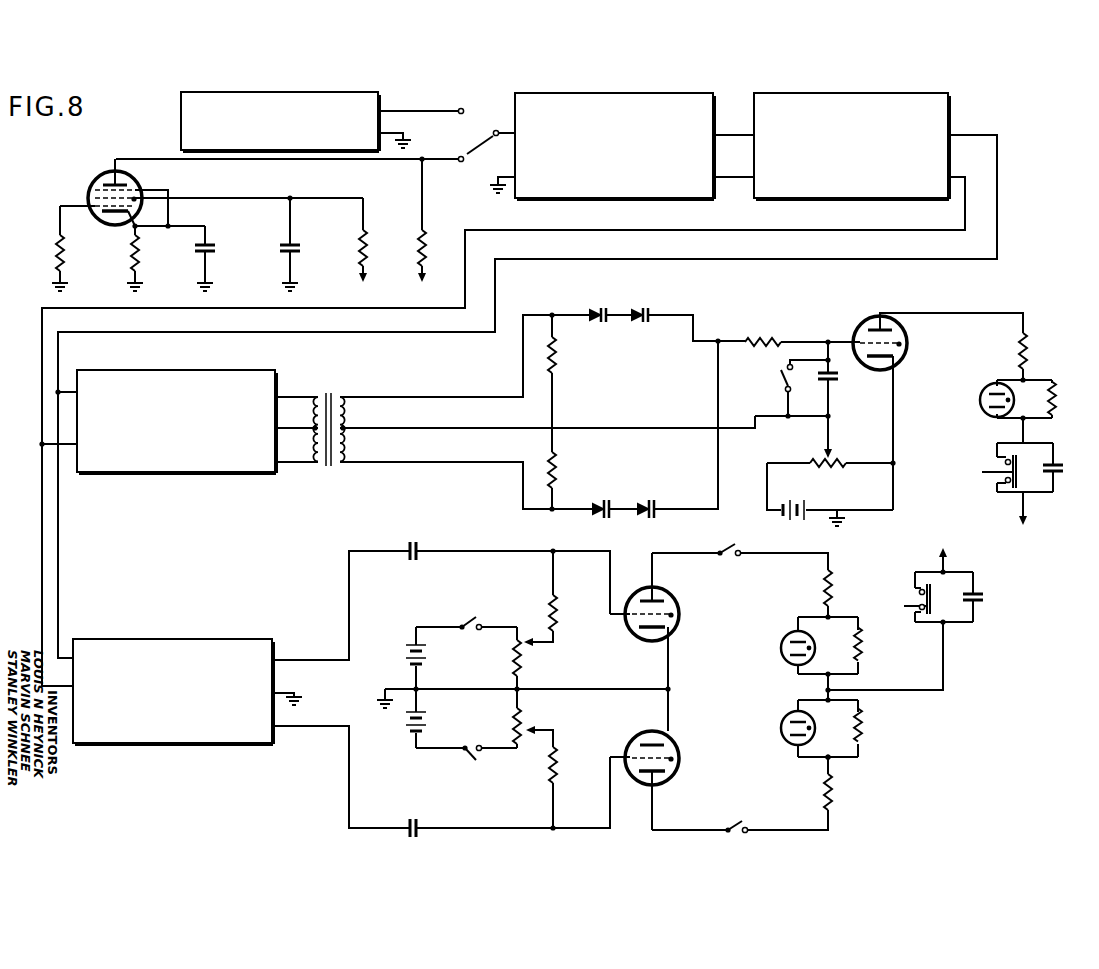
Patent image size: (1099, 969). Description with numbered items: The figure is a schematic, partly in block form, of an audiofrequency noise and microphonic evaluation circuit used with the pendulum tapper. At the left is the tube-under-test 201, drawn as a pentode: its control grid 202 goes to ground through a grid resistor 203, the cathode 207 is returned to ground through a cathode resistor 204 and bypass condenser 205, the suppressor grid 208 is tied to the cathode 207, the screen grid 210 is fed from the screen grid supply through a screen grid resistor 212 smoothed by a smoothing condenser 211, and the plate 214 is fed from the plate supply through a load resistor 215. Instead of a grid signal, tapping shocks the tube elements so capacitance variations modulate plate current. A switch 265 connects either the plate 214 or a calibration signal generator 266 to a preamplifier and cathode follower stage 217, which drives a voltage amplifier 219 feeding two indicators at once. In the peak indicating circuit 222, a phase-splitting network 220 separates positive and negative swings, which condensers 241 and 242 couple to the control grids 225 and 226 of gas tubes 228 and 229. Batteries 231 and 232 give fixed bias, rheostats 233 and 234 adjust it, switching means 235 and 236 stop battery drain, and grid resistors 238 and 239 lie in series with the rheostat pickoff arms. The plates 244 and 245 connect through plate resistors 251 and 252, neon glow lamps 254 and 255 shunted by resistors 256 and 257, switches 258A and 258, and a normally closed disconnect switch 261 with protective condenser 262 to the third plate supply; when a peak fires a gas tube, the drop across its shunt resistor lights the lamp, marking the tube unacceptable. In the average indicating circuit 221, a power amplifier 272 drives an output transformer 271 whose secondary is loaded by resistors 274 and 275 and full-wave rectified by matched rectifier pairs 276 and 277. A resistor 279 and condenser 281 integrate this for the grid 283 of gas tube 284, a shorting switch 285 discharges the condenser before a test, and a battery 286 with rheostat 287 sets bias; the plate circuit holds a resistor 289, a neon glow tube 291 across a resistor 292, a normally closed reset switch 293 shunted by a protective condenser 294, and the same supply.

The tube-under-test 201 is at (103, 171).
The control grid 202 is at (97, 205).
The grid resistor 203 is at (56, 246).
The cathode resistor 204 is at (130, 254).
The bypass condenser 205 is at (195, 249).
The cathode 207 is at (120, 214).
The suppressor grid 208 is at (100, 182).
The screen grid 210 is at (96, 190).
The smoothing condenser 211 is at (280, 248).
The screen grid resistor 212 is at (368, 248).
The plate 214 is at (131, 183).
The load resistor 215 is at (428, 248).
The preamplifier and cathode follower stage 217 is at (620, 84).
The voltage amplifier 219 is at (858, 84).
The phase-splitting network 220 is at (173, 628).
The average indicating circuit 221 is at (510, 480).
The peak indicating circuit 222 is at (338, 770).
The control grid 225 is at (628, 632).
The control grid 226 is at (632, 742).
The gas tube 228 is at (678, 610).
The gas tube 229 is at (680, 752).
The battery 231 is at (426, 667).
The battery 232 is at (426, 711).
The rheostat 233 is at (522, 669).
The rheostat 234 is at (524, 718).
The switching means 235 is at (467, 617).
The switching means 236 is at (468, 762).
The grid resistor 238 is at (555, 600).
The grid resistor 239 is at (556, 760).
The condenser 241 is at (398, 542).
The condenser 242 is at (425, 826).
The plate 244 is at (662, 600).
The plate 245 is at (664, 776).
The plate resistor 251 is at (833, 596).
The plate resistor 252 is at (838, 801).
The neon glow lamp 254 is at (781, 640).
The neon glow lamp 255 is at (782, 717).
The resistor 256 is at (864, 653).
The resistor 257 is at (864, 730).
The switch 258 is at (732, 820).
The switch 258A is at (729, 548).
The normally closed disconnect switch 261 is at (902, 604).
The protective condenser 262 is at (990, 598).
The switch 265 is at (470, 136).
The calibration signal generator 266 is at (363, 93).
The output transformer 271 is at (346, 370).
The power amplifier 272 is at (168, 360).
The resistor 274 is at (559, 360).
The resistor 275 is at (556, 472).
The rectifiers 276 is at (601, 308).
The rectifiers 277 is at (616, 496).
The resistor 279 is at (760, 340).
The condenser 281 is at (840, 382).
The grid 283 is at (862, 330).
The gas tube 284 is at (906, 353).
The shorting switch 285 is at (780, 378).
The battery 286 is at (803, 510).
The rheostat 287 is at (845, 462).
The resistor 289 is at (1027, 350).
The neon glow tube 291 is at (982, 408).
The resistor 292 is at (1055, 399).
The normally closed reset switch 293 is at (988, 464).
The protective condenser 294 is at (1056, 467).